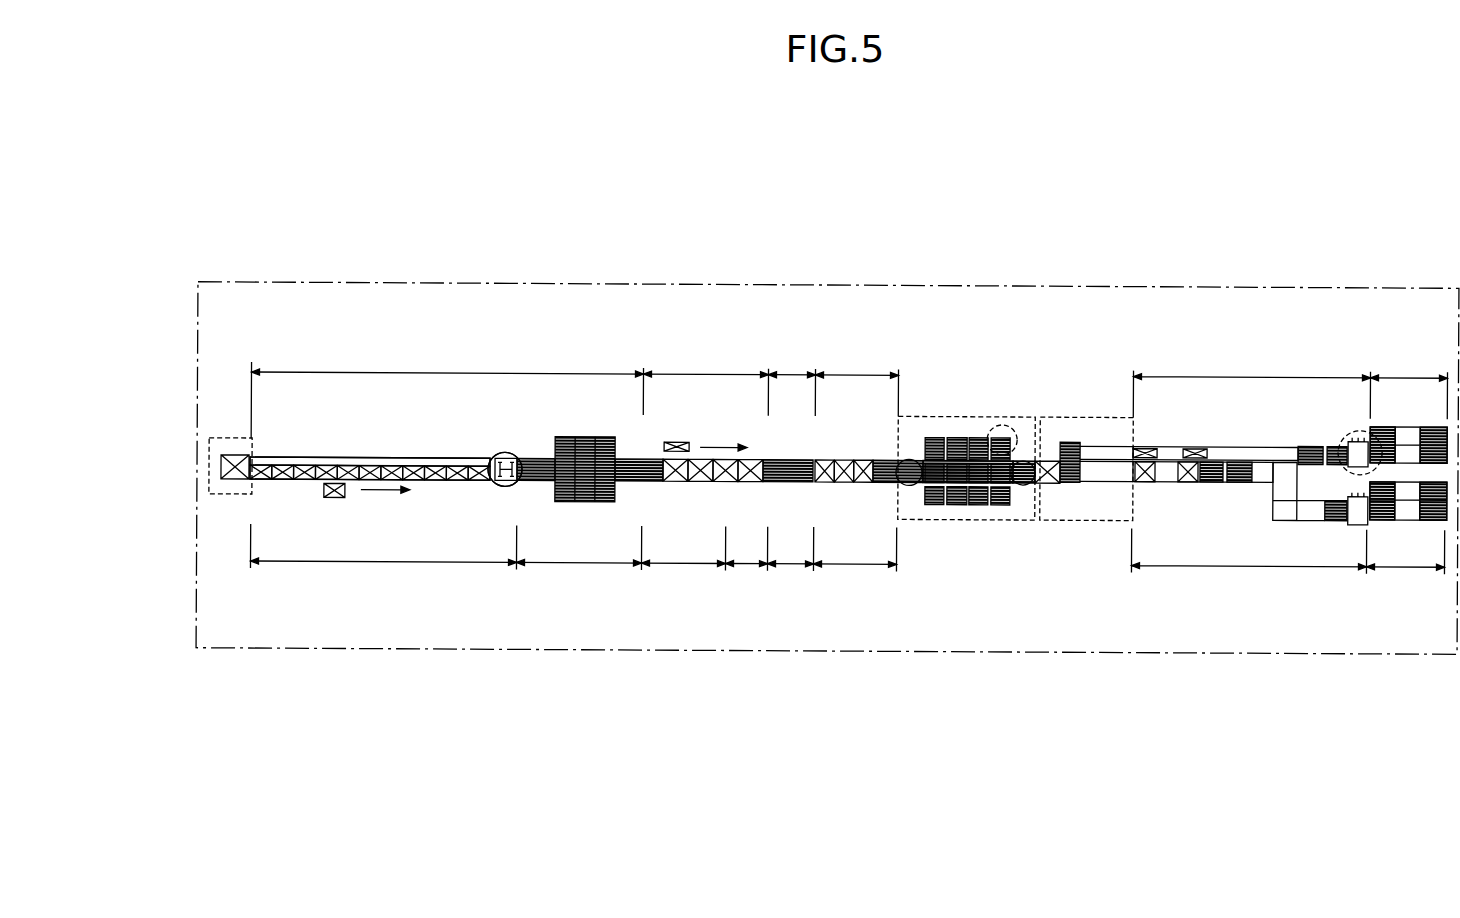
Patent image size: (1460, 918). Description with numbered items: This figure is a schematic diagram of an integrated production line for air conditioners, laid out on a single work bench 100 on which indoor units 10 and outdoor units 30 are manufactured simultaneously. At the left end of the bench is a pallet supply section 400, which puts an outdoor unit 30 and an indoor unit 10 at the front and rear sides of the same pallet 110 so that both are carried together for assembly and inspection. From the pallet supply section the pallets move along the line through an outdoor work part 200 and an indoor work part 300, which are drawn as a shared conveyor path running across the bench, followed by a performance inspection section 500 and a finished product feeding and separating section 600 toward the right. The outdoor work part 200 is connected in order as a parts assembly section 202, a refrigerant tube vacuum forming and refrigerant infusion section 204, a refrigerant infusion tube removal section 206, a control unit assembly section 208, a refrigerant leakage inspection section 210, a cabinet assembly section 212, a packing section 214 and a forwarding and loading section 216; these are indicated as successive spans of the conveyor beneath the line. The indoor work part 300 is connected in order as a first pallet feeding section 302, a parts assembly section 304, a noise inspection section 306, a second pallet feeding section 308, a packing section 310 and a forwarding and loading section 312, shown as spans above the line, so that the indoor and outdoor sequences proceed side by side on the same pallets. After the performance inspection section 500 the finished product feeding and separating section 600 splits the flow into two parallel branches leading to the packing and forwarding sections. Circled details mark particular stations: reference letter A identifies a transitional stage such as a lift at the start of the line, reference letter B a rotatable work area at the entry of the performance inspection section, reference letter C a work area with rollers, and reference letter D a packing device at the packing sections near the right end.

The work bench 100 is at (365, 282).
The pallet supply section 400 is at (197, 462).
The pallet 110 is at (221, 468).
The outdoor unit 30 is at (332, 498).
The indoor work part 300 is at (466, 480).
The parts assembly section 202 is at (378, 562).
The outdoor work part 200 is at (490, 432).
The refrigerant tube vacuum forming and refrigerant infusion section 204 is at (570, 562).
The refrigerant infusion tube removal section 206 is at (680, 561).
The control unit assembly section 208 is at (744, 561).
The refrigerant leakage inspection section 210 is at (789, 561).
The cabinet assembly section 212 is at (855, 561).
The indoor unit 10 is at (675, 439).
The first pallet feeding section 302 is at (452, 372).
The parts assembly section 304 is at (710, 371).
The noise inspection section 306 is at (794, 371).
The second pallet feeding section 308 is at (860, 371).
The packing section 310 is at (1200, 372).
The forwarding and loading section 312 is at (1412, 372).
The performance inspection section 500 is at (965, 517).
The finished product feeding and separating section 600 is at (1087, 517).
The packing section 214 is at (1250, 561).
The forwarding and loading section 216 is at (1408, 561).
The transitional stage A is at (515, 450).
The rotatable work area B is at (905, 455).
The work area with rollers C is at (1001, 421).
The packing device D is at (1360, 425).